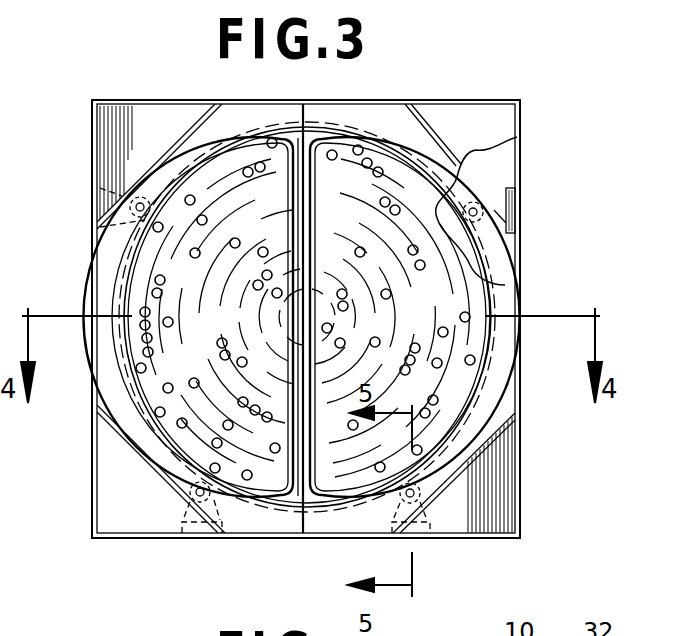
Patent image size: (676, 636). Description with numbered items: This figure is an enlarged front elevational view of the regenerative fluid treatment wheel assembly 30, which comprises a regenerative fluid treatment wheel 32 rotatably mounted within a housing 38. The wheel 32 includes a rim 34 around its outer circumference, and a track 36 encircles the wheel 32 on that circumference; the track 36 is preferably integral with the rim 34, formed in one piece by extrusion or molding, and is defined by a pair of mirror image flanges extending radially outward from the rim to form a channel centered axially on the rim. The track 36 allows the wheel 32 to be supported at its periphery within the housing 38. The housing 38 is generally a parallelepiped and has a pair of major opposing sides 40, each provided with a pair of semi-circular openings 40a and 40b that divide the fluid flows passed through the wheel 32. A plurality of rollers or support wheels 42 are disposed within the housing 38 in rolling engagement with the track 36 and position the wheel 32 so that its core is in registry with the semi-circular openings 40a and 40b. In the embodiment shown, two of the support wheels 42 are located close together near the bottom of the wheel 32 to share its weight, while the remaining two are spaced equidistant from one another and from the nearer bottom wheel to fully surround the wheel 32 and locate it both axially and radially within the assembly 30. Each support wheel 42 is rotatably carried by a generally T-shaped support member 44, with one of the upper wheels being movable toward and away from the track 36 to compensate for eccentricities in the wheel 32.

The regenerative fluid treatment wheel assembly 30 is at (76, 52).
The regenerative fluid treatment wheel 32 is at (432, 289).
The rim 34 is at (248, 124).
The track 36 is at (125, 368).
The housing 38 is at (474, 131).
The major opposing sides 40 is at (112, 135).
The semi-circular opening 40a is at (167, 258).
The semi-circular opening 40b is at (467, 325).
The support wheels 42 is at (100, 178).
The support member 44 is at (508, 222).